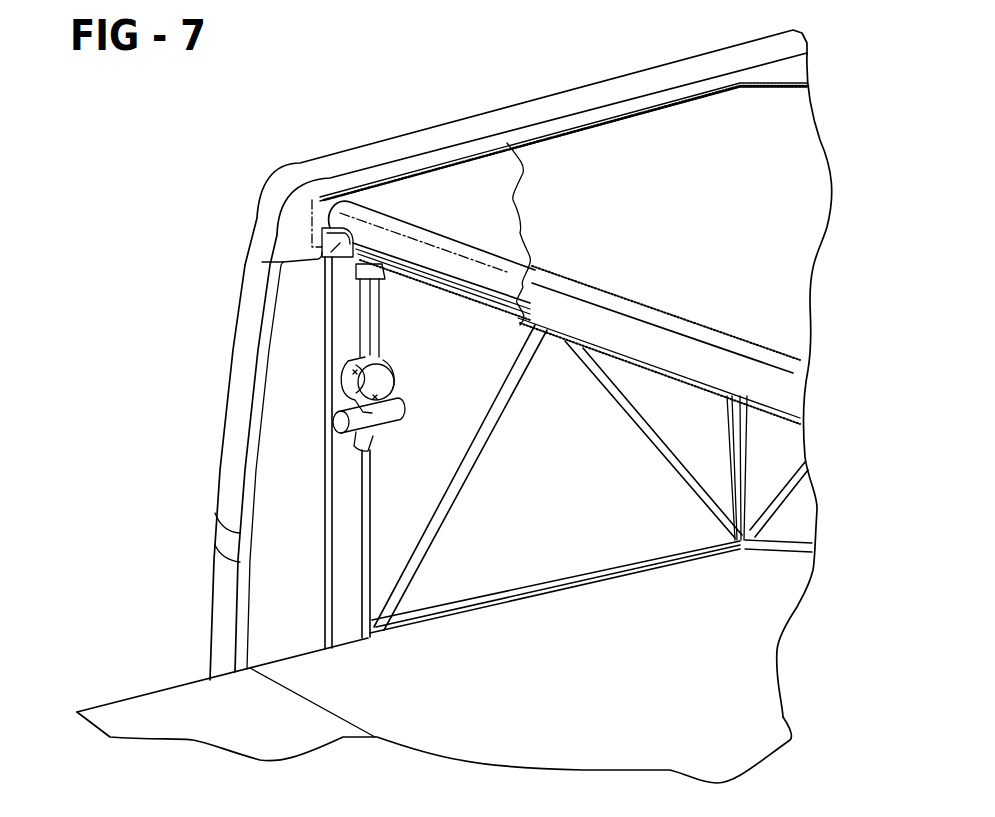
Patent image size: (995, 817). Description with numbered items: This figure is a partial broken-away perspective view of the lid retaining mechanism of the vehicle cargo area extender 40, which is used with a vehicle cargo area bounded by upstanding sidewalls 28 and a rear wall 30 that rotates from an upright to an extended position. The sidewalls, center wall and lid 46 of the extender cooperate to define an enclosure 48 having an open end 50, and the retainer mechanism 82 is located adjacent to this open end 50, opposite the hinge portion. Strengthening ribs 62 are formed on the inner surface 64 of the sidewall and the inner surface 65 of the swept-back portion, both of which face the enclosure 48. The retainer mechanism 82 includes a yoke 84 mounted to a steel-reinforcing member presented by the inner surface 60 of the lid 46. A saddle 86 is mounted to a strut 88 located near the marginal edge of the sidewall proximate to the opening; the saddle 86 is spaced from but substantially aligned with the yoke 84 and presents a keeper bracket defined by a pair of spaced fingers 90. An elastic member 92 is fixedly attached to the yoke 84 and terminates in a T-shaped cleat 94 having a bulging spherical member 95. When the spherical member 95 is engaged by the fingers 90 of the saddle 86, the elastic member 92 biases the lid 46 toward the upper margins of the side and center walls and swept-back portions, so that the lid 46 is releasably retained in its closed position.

The upstanding sidewalls 28 is at (275, 593).
The rear wall 30 is at (248, 724).
The vehicle cargo area extender 40 is at (625, 178).
The lid 46 is at (450, 207).
The enclosure 48 is at (770, 555).
The open end 50 is at (352, 572).
The inner surface of the lid 60 is at (652, 383).
The ribs 62 is at (683, 487).
The inner surface of the sidewall 64 is at (547, 448).
The inner surface of the swept-back portion 65 is at (759, 460).
The retainer mechanism 82 is at (300, 276).
The yoke 84 is at (262, 262).
The saddle 86 is at (400, 384).
The strut 88 is at (347, 493).
The fingers 90 is at (385, 372).
The elastic member 92 is at (359, 333).
The T-shaped cleat 94 is at (402, 410).
The bulging spherical member 95 is at (363, 447).